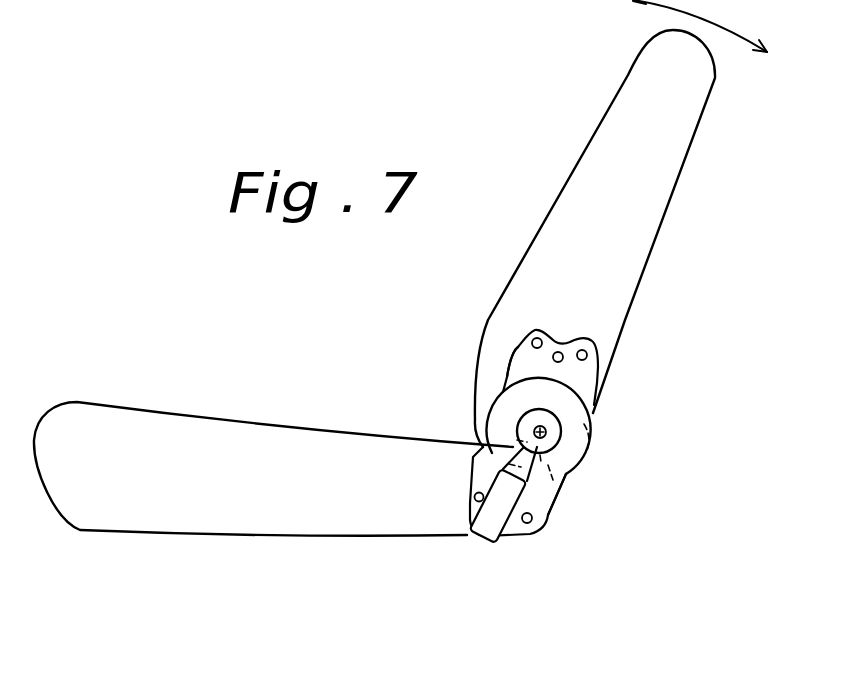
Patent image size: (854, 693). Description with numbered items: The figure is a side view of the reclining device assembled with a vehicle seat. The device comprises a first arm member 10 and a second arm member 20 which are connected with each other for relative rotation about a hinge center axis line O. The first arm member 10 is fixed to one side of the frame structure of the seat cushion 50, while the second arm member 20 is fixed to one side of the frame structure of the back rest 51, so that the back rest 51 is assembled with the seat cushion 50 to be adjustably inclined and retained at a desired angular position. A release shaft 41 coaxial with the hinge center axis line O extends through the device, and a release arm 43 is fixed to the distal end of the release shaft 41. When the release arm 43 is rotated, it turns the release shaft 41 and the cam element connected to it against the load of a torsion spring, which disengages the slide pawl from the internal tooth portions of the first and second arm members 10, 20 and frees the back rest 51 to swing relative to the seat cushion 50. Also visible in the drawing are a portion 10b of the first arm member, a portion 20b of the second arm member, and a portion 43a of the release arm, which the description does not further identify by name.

The first arm member 10 is at (604, 427).
The lower arm side portion 10b is at (538, 486).
The second arm member 20 is at (603, 358).
The upper arm side portion 20b is at (518, 363).
The release shaft 41 is at (541, 433).
The release arm 43 is at (503, 462).
The operating lever grip portion 43a is at (506, 532).
The seat cushion 50 is at (297, 517).
The back rest 51 is at (632, 256).
The hinge center axis line O is at (541, 433).